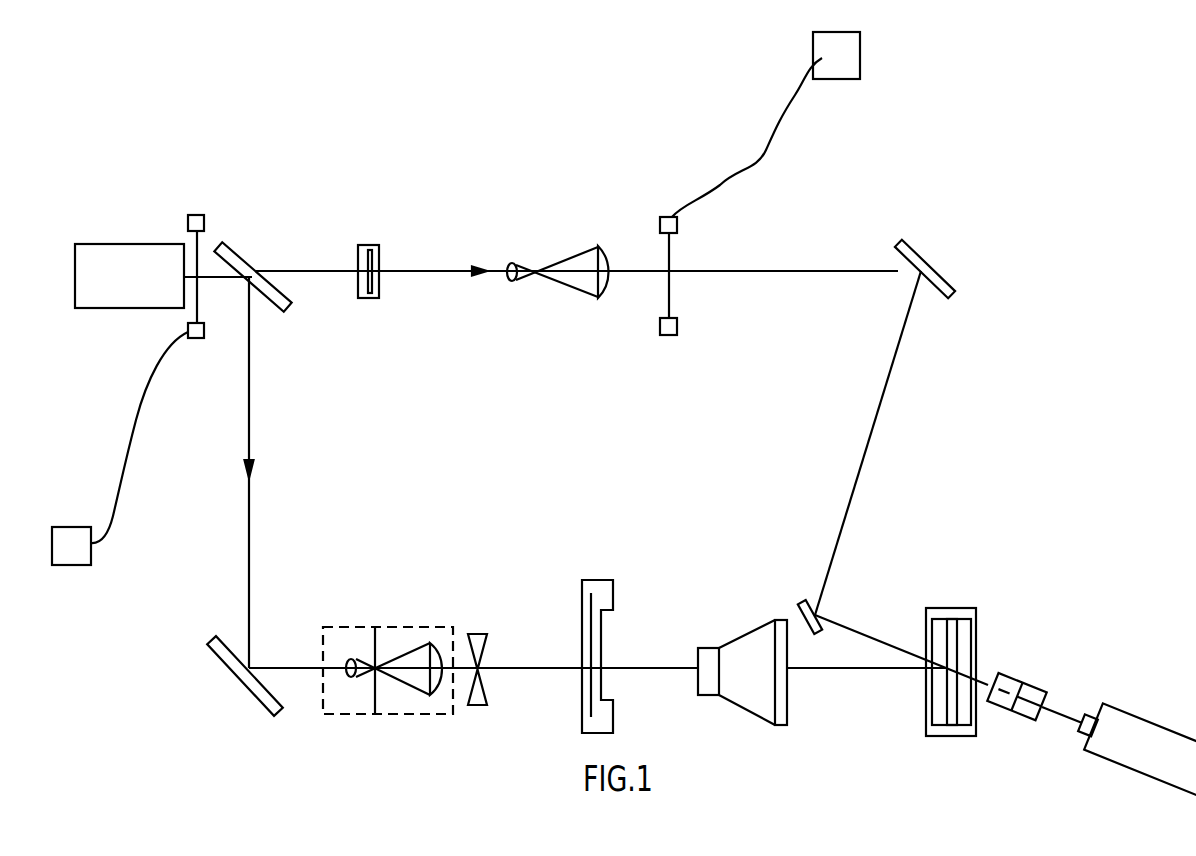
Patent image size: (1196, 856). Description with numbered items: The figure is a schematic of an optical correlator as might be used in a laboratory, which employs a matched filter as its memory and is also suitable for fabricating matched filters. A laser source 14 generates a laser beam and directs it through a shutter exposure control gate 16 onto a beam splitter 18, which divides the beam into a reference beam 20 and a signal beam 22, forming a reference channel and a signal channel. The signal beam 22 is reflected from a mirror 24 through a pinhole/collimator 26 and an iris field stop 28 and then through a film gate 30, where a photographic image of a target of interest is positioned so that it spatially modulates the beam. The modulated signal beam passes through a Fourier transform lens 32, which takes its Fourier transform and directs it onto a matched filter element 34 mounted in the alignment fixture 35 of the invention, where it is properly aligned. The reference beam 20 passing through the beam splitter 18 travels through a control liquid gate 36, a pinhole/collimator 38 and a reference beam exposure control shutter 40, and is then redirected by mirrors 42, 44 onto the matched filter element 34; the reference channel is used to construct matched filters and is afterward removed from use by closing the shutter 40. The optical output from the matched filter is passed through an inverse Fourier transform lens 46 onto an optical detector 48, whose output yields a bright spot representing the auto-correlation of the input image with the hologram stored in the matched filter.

The laser source 14 is at (118, 298).
The shutter exposure control gate 16 is at (197, 239).
The beam splitter 18 is at (288, 302).
The reference beam 20 is at (450, 274).
The signal beam 22 is at (250, 447).
The mirror 24 is at (253, 697).
The pinhole/collimator 26 is at (452, 627).
The iris field stop 28 is at (487, 701).
The film gate 30 is at (613, 720).
The Fourier transform lens 32 is at (787, 715).
The matched filter element 34 is at (958, 638).
The alignment fixture 35 is at (932, 738).
The control liquid gate 36 is at (378, 243).
The pinhole/collimator 38 is at (570, 260).
The reference beam exposure control shutter 40 is at (668, 337).
The mirror 42 is at (935, 268).
The mirror 44 is at (795, 610).
The inverse Fourier transform lens 46 is at (1047, 690).
The optical detector 48 is at (1153, 717).